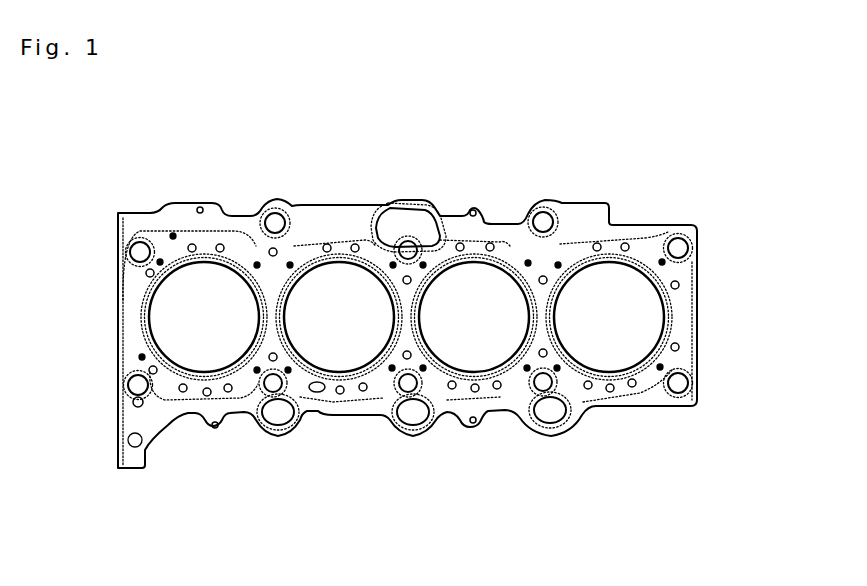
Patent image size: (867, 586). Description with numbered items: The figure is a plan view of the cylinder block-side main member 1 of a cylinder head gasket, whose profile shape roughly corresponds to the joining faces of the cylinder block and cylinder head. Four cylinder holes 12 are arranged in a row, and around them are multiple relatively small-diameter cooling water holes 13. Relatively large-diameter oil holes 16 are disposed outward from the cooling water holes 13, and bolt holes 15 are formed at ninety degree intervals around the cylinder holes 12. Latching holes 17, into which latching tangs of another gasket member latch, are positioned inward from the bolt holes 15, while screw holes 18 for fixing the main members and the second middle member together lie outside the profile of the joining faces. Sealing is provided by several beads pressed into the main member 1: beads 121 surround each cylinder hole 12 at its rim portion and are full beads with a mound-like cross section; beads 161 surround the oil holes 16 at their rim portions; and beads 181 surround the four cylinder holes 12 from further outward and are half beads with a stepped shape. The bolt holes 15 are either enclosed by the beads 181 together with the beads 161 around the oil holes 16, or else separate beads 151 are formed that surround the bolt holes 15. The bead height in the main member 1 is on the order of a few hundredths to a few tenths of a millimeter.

The cylinder block-side main member 1 is at (705, 100).
The cylinder holes 12 is at (227, 273).
The beads 121 is at (633, 268).
The cooling water holes 13 is at (190, 243).
The bolt holes 15 is at (134, 238).
The beads 151 is at (698, 230).
The oil holes 16 is at (273, 217).
The beads 161 is at (407, 198).
The latching holes 17 is at (164, 255).
The screw holes 18 is at (224, 416).
The beads 181 is at (696, 313).